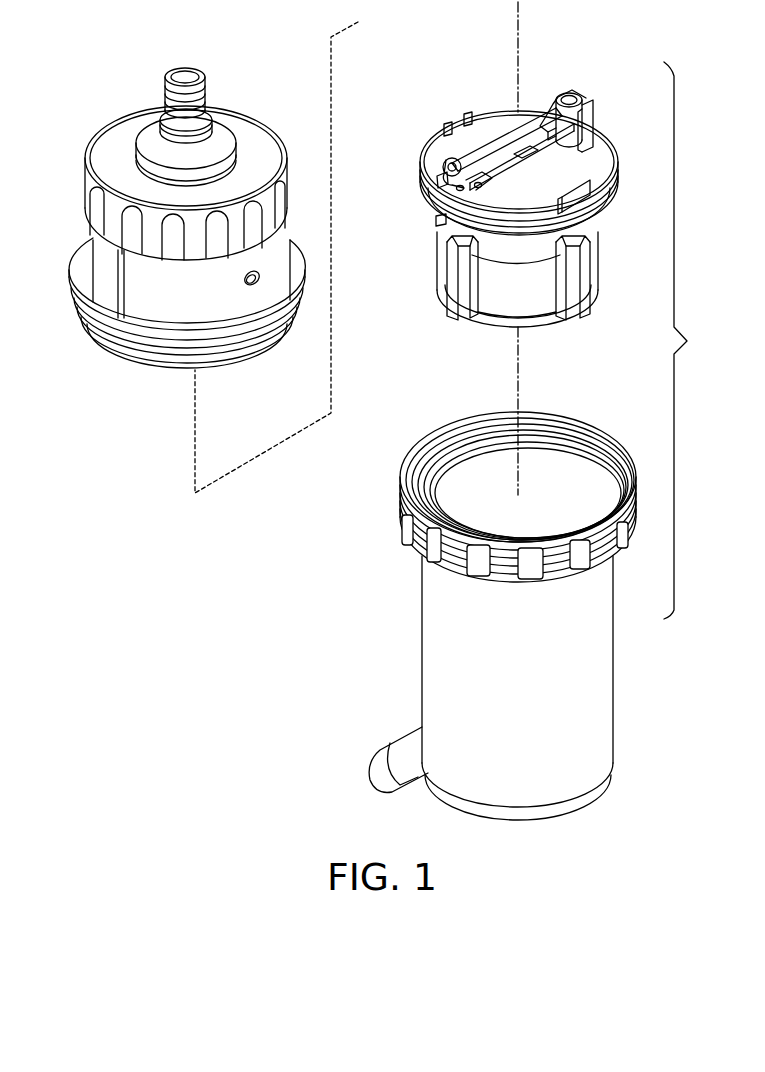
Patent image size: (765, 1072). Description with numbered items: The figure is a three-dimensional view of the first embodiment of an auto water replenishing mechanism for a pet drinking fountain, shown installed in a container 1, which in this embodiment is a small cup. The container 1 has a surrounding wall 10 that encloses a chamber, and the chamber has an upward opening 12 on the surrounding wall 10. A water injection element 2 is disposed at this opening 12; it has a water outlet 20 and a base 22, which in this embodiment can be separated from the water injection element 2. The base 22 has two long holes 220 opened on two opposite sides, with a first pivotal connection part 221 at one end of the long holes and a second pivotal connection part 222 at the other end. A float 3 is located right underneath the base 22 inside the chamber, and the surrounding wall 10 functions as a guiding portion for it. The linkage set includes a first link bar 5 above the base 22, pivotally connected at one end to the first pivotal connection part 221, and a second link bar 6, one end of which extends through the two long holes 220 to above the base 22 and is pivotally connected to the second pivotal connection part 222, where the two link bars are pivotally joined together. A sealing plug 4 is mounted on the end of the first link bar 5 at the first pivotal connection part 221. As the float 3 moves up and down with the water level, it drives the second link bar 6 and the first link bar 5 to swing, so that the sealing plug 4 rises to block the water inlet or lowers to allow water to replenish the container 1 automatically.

The container 1 is at (494, 596).
The surrounding wall 10 is at (440, 662).
The opening 12 is at (480, 480).
The water injection element 2 is at (287, 198).
The water outlet 20 is at (212, 100).
The base 22 is at (445, 147).
The long holes 220 is at (440, 181).
The first pivotal connection part 221 is at (572, 136).
The second pivotal connection part 222 is at (476, 150).
The float 3 is at (595, 272).
The sealing plug 4 is at (562, 96).
The first link bar 5 is at (494, 150).
The second link bar 6 is at (521, 183).